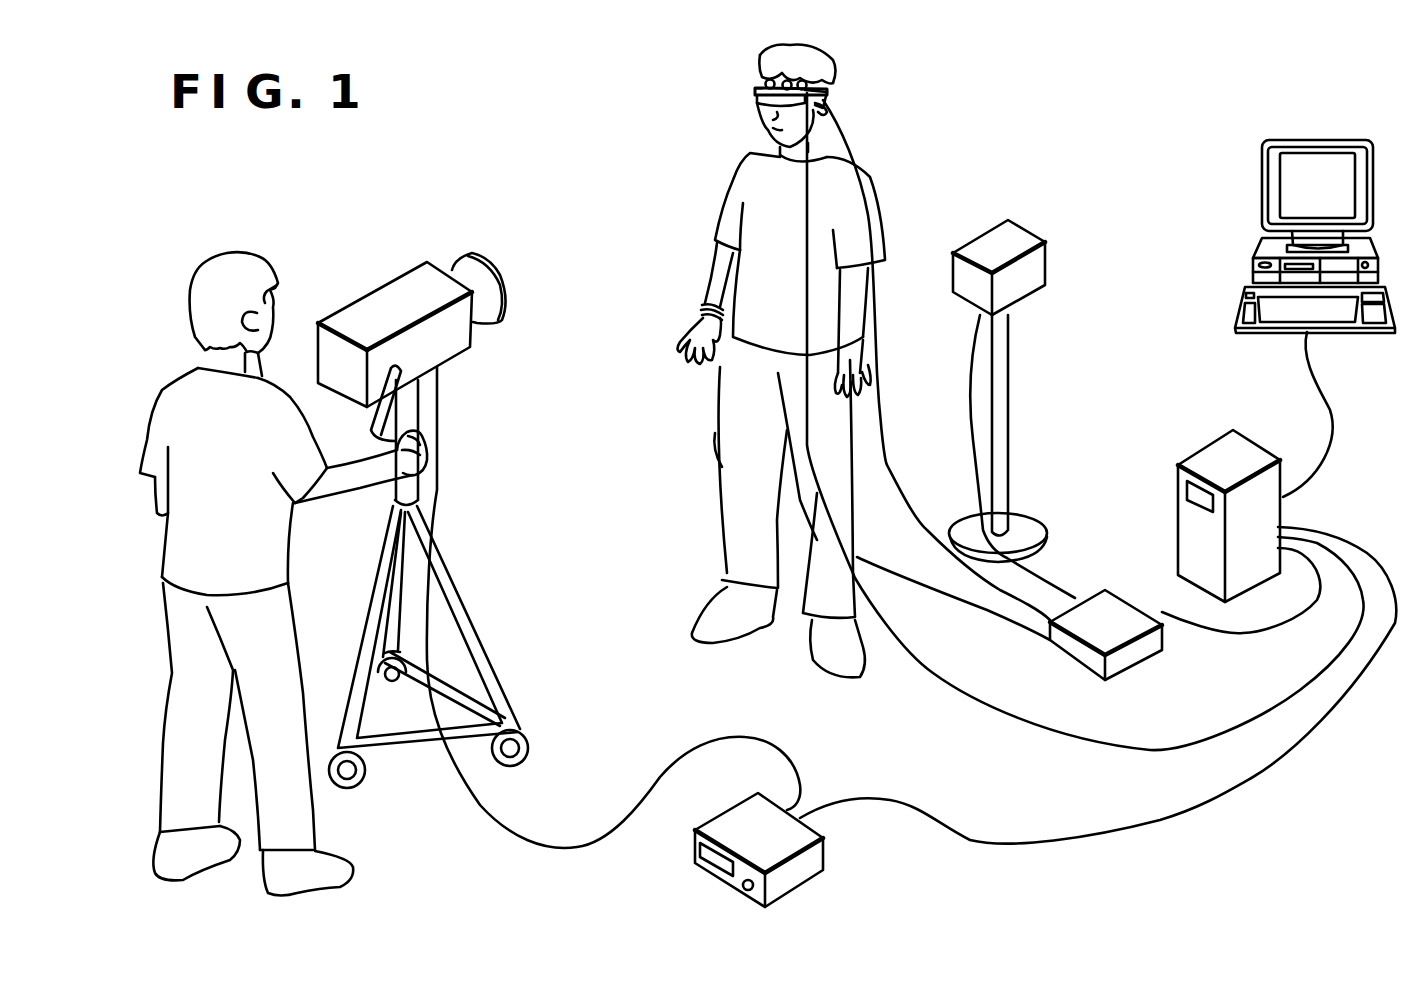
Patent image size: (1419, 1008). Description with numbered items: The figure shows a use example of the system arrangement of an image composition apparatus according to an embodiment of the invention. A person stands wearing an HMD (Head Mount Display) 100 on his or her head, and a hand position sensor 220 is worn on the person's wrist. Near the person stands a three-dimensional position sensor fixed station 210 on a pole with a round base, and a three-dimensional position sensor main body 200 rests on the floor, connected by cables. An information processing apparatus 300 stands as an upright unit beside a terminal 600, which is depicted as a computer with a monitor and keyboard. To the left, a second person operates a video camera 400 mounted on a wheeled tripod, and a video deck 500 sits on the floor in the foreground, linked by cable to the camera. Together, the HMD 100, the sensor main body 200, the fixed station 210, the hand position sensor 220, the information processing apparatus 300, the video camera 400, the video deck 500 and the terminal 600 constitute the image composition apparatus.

The HMD (Head Mount Display) 100 is at (757, 103).
The three-dimensional position sensor main body 200 is at (1112, 607).
The three-dimensional position sensor fixed station 210 is at (1010, 240).
The hand position sensor 220 is at (708, 314).
The information processing apparatus 300 is at (1220, 450).
The video camera 400 is at (385, 300).
The video deck 500 is at (810, 860).
The terminal 600 is at (1270, 190).